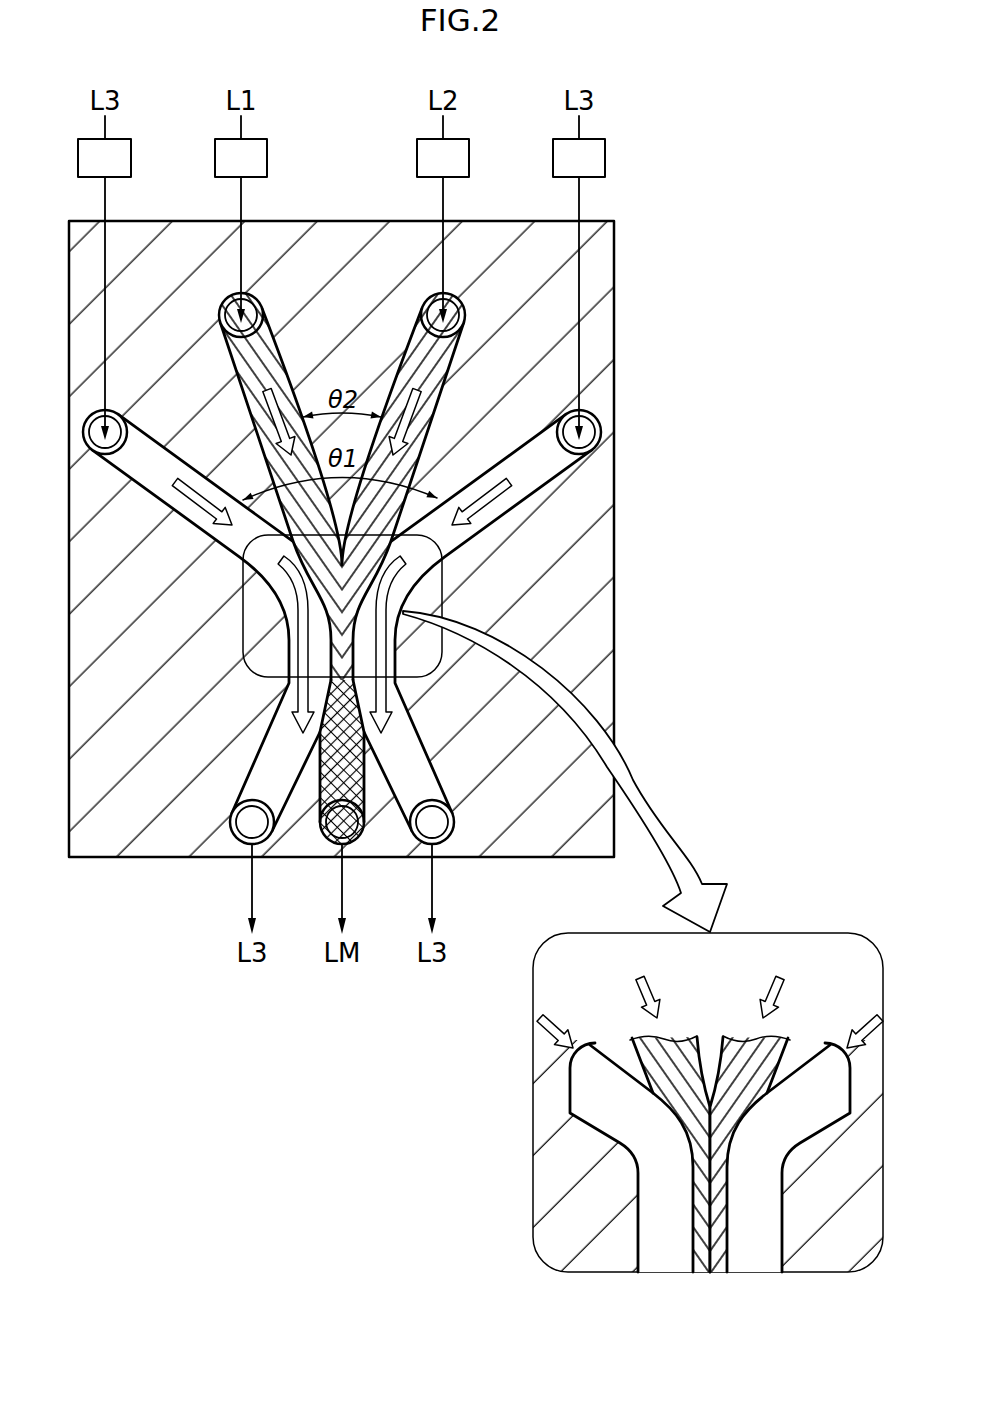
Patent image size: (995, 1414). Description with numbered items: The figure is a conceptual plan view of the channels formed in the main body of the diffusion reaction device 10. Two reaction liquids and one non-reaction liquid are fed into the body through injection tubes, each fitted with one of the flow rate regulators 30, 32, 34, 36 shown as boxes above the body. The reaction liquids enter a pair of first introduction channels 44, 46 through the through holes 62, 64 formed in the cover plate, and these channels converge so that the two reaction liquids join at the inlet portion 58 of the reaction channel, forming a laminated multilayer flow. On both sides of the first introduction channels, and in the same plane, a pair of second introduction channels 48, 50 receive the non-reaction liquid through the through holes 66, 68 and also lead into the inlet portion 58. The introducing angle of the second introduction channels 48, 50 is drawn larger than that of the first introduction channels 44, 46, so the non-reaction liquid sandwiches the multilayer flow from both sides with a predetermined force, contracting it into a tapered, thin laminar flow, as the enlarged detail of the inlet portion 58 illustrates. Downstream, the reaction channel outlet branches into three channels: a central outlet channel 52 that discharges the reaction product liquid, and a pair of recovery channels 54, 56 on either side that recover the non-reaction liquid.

The diffusion reaction device 10 is at (686, 469).
The flow rate regulator 30 is at (267, 155).
The flow rate regulator 32 is at (469, 155).
The flow rate regulator 34 is at (131, 155).
The flow rate regulator 36 is at (605, 155).
The first introduction channel 44 is at (243, 394).
The first introduction channel 46 is at (445, 385).
The second introduction channel 48 is at (187, 518).
The second introduction channel 50 is at (500, 517).
The outlet channel 52 is at (365, 790).
The recovery channel 54 is at (255, 762).
The recovery channel 56 is at (446, 771).
The inlet portion 58 is at (408, 613).
The through hole 62 is at (258, 299).
The through hole 64 is at (459, 299).
The through hole 66 is at (91, 453).
The through hole 68 is at (598, 421).